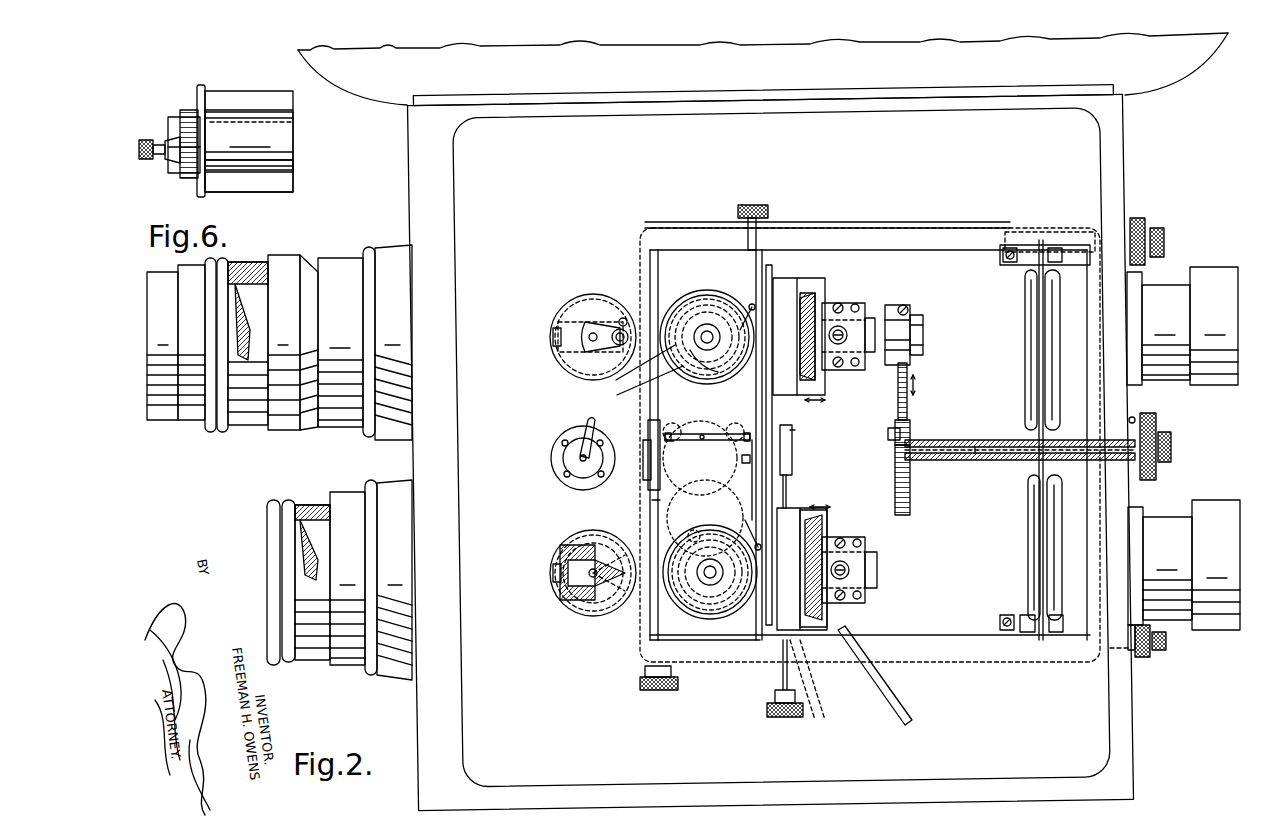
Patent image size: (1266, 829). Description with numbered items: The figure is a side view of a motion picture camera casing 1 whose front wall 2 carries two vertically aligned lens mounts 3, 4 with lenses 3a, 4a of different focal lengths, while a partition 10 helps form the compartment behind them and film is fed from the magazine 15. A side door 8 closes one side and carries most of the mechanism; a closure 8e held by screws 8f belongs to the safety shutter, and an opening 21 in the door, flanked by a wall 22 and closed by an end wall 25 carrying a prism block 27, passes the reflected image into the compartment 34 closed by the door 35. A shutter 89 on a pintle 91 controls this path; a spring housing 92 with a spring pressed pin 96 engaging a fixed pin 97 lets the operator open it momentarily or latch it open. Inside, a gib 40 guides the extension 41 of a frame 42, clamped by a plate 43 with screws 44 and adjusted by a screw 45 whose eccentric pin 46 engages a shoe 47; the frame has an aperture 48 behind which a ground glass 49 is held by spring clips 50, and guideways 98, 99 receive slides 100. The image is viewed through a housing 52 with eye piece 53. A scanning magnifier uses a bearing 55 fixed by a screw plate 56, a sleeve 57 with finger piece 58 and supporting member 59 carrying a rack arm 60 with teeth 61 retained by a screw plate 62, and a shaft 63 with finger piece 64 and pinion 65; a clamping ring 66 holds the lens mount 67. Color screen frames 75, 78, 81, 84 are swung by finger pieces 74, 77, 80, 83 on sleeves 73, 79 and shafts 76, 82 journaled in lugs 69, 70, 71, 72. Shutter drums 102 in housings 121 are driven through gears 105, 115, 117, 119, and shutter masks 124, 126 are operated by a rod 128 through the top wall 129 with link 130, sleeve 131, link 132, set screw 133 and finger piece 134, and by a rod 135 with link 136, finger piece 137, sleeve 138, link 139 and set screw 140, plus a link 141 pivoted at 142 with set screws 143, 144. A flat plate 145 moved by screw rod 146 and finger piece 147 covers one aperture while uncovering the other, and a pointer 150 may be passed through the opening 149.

In FIG. 2, the camera casing 1 is at (1090, 748).
In FIG. 2, the front wall 2 is at (412, 177).
In FIG. 2, the lens mount 3 is at (284, 260).
In FIG. 2, the lens 3a is at (258, 262).
In FIG. 2, the lens mount 4 is at (345, 498).
In FIG. 2, the lens 4a is at (313, 504).
In FIG. 2, the side door 8 is at (552, 450).
In FIG. 2, the flanged cup-like closure 8e is at (562, 478).
In FIG. 2, the screws 8f is at (551, 460).
In FIG. 2, the partition 10 is at (1058, 262).
In FIG. 2, the film magazine 15 is at (1153, 72).
In FIG. 6, the opening 21 is at (289, 178).
In FIG. 2, the opening 21 is at (645, 487).
In FIG. 2, the wall 22 is at (553, 318).
In FIG. 6, the end wall 25 is at (200, 88).
In FIG. 2, the end wall 25 is at (582, 368).
In FIG. 6, the block 27 is at (262, 95).
In FIG. 2, the block 27 is at (565, 605).
In FIG. 2, the compartment 34 is at (945, 258).
In FIG. 2, the door 35 is at (915, 655).
In FIG. 2, the plate or gib 40 is at (866, 320).
In FIG. 2, the right angled extension 41 is at (868, 355).
In FIG. 2, the frame member 42 is at (788, 280).
In FIG. 2, the clamping plate 43 is at (857, 306).
In FIG. 2, the screws 44 is at (841, 303).
In FIG. 2, the screw 45 is at (916, 566).
In FIG. 2, the eccentric pin 46 is at (872, 308).
In FIG. 2, the shoe 47 is at (860, 372).
In FIG. 2, the aperture 48 is at (790, 455).
In FIG. 2, the ground glass 49 is at (820, 320).
In FIG. 2, the spring clips 50 is at (815, 300).
In FIG. 2, the housing 52 is at (1154, 290).
In FIG. 2, the eye piece 53 is at (1212, 273).
In FIG. 2, the hollow bearing 55 is at (996, 462).
In FIG. 2, the screw plate 56 is at (1135, 418).
In FIG. 2, the sleeve 57 is at (986, 440).
In FIG. 2, the finger piece 58 is at (1157, 423).
In FIG. 2, the supporting member 59 is at (912, 437).
In FIG. 2, the arm 60 is at (906, 380).
In FIG. 2, the teeth 61 is at (915, 404).
In FIG. 2, the screw plate 62 is at (895, 435).
In FIG. 2, the shaft 63 is at (975, 462).
In FIG. 2, the finger piece 64 is at (1172, 449).
In FIG. 2, the pinion 65 is at (896, 456).
In FIG. 2, the clamping ring 66 is at (906, 325).
In FIG. 2, the lens mount 67 is at (922, 330).
In FIG. 2, the lug 69 is at (1005, 258).
In FIG. 2, the lug 70 is at (1002, 620).
In FIG. 2, the lug 71 is at (1025, 618).
In FIG. 2, the lug 72 is at (1057, 618).
In FIG. 2, the hollow sleeve 73 is at (1072, 244).
In FIG. 2, the finger piece 74 is at (1143, 220).
In FIG. 2, the frame 75 is at (1056, 330).
In FIG. 2, the shaft 76 is at (1118, 225).
In FIG. 2, the finger piece 77 is at (1165, 243).
In FIG. 2, the frame 78 is at (1025, 325).
In FIG. 2, the sleeve 79 is at (1135, 670).
In FIG. 2, the finger piece 80 is at (1148, 655).
In FIG. 2, the frame 81 is at (1057, 552).
In FIG. 2, the shaft 82 is at (1118, 650).
In FIG. 2, the finger piece 83 is at (1168, 641).
In FIG. 2, the frame 84 is at (1030, 540).
In FIG. 6, the shutter 89 is at (290, 139).
In FIG. 2, the shutter 89 is at (607, 296).
In FIG. 2, the pintle 91 is at (590, 594).
In FIG. 2, the cup-like housing 92 is at (604, 362).
In FIG. 6, the spring pressed pin 96 is at (152, 139).
In FIG. 2, the spring pressed pin 96 is at (615, 332).
In FIG. 6, the fixed pin 97 is at (191, 137).
In FIG. 2, the fixed pin 97 is at (622, 318).
In FIG. 2, the slot or guideway 98 is at (770, 275).
In FIG. 2, the slot or guideway 99 is at (806, 292).
In FIG. 2, the slides 100 is at (779, 460).
In FIG. 2, the rotatable drum 102 is at (648, 352).
In FIG. 2, the gear 105 is at (676, 300).
In FIG. 2, the gear 115 is at (700, 447).
In FIG. 2, the gear 117 is at (705, 518).
In FIG. 2, the gear 119 is at (645, 630).
In FIG. 2, the housing 121 is at (680, 370).
In FIG. 2, the masking or dissolving shutter 124 is at (705, 296).
In FIG. 2, the shutter mask 126 is at (723, 291).
In FIG. 2, the rod 128 is at (740, 209).
In FIG. 2, the top wall 129 is at (931, 224).
In FIG. 2, the link connection 130 is at (752, 304).
In FIG. 2, the sleeve 131 is at (754, 490).
In FIG. 2, the link connection 132 is at (750, 531).
In FIG. 2, the set screw 133 is at (739, 454).
In FIG. 2, the finger piece 134 is at (761, 215).
In FIG. 2, the rod 135 is at (656, 507).
In FIG. 2, the link connection 136 is at (677, 327).
In FIG. 2, the finger piece 137 is at (655, 686).
In FIG. 2, the sleeve 138 is at (646, 462).
In FIG. 2, the link connection 139 is at (688, 530).
In FIG. 2, the set screw 140 is at (670, 423).
In FIG. 2, the link 141 is at (734, 420).
In FIG. 2, the pivot 142 is at (702, 440).
In FIG. 2, the set screw 143 is at (734, 436).
In FIG. 2, the set screw 144 is at (707, 436).
In FIG. 2, the flat plate 145 is at (797, 480).
In FIG. 2, the screw rod 146 is at (786, 492).
In FIG. 2, the finger piece 147 is at (783, 719).
In FIG. 2, the opening 149 is at (855, 660).
In FIG. 2, the pointer 150 is at (897, 712).